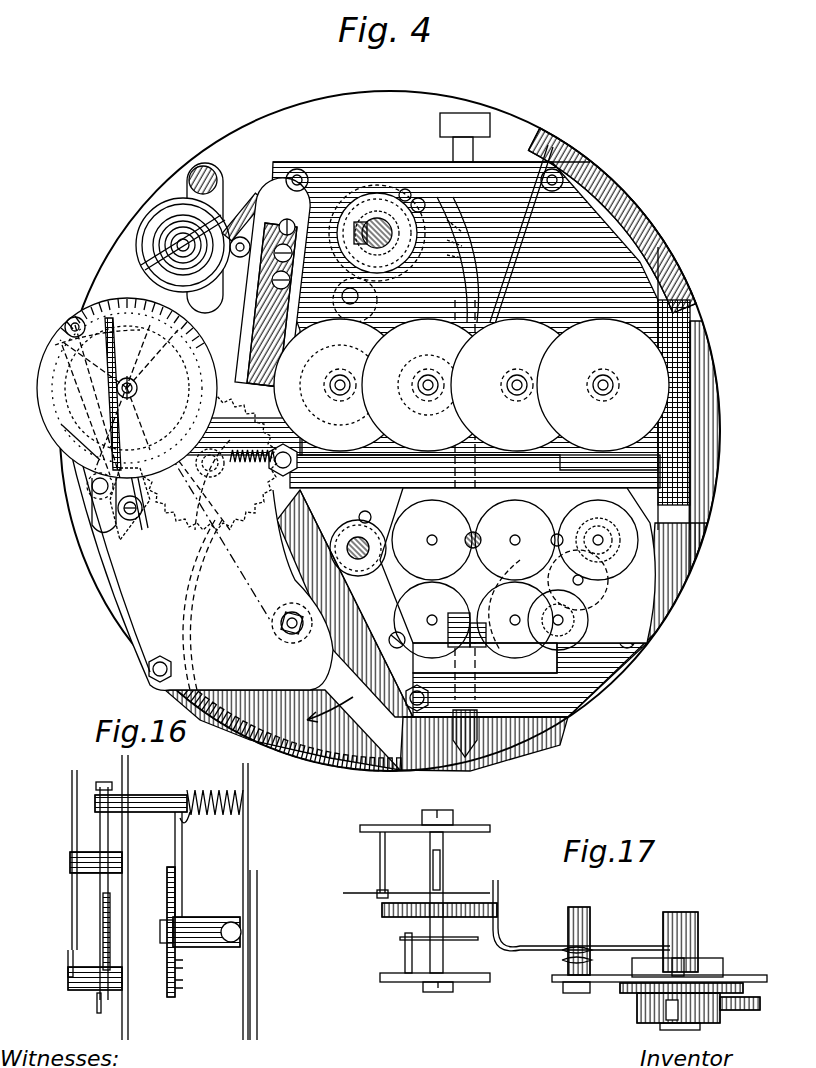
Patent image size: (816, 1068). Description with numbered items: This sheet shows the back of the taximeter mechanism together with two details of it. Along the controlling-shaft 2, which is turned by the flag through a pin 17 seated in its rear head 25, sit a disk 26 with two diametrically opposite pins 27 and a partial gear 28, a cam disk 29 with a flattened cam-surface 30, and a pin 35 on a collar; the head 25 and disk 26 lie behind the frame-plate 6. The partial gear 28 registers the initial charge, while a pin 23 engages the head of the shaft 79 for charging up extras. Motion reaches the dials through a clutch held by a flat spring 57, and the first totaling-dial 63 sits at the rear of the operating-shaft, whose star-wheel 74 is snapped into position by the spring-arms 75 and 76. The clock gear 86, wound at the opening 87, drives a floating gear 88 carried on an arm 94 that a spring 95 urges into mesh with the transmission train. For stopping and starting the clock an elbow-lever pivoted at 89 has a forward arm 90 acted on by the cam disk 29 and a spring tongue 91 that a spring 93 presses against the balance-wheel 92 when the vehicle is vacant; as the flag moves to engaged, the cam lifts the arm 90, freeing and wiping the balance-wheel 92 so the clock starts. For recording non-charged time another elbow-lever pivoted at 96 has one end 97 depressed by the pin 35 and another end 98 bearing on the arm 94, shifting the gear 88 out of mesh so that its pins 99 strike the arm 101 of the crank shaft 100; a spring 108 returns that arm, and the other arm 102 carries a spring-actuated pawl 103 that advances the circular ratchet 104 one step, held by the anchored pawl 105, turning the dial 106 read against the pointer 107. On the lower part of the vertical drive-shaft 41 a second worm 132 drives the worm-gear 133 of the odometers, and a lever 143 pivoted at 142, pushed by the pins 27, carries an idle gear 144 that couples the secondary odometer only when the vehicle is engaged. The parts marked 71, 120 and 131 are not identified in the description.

In FIG. 4, the controlling-shaft 2 is at (377, 233).
In FIG. 17, the controlling-shaft 2 is at (698, 925).
In FIG. 4, the frame-plate 6 is at (712, 437).
In FIG. 4, the pin of the flag-shaft 17 is at (347, 215).
In FIG. 4, the pin 23 is at (366, 512).
In FIG. 4, the head 25 is at (418, 198).
In FIG. 17, the head 25 is at (645, 1022).
In FIG. 4, the disk 26 is at (376, 192).
In FIG. 17, the disk 26 is at (628, 993).
In FIG. 4, the pins 27 is at (398, 162).
In FIG. 17, the pins 27 is at (680, 1024).
In FIG. 4, the partial gear 28 is at (334, 188).
In FIG. 4, the cam disk 29 is at (462, 222).
In FIG. 17, the cam disk 29 is at (725, 963).
In FIG. 4, the flattened cam-surface 30 is at (462, 188).
In FIG. 17, the flattened cam-surface 30 is at (712, 960).
In FIG. 4, the pin 35 is at (425, 205).
In FIG. 4, the vertical drive-shaft 41 is at (474, 150).
In FIG. 4, the flat spring 57 is at (262, 302).
In FIG. 4, the totaling-dial 63 is at (471, 403).
In FIG. 4, the pinion 71 is at (354, 500).
In FIG. 4, the star-wheel 74 is at (353, 476).
In FIG. 4, the spring-arm 75 is at (341, 300).
In FIG. 4, the spring-arm 76 is at (381, 469).
In FIG. 4, the shaft 79 is at (360, 578).
In FIG. 4, the clock gear 86 is at (350, 735).
In FIG. 4, the winding opening 87 is at (284, 636).
In FIG. 4, the floating gear 88 is at (200, 533).
In FIG. 16, the floating gear 88 is at (171, 998).
In FIG. 4, the pivot 89 is at (297, 168).
In FIG. 17, the pivot 89 is at (565, 990).
In FIG. 4, the forward arm 90 is at (405, 189).
In FIG. 17, the forward arm 90 is at (675, 960).
In FIG. 4, the spring tongue 91 is at (245, 205).
In FIG. 17, the spring tongue 91 is at (498, 930).
In FIG. 4, the balance-wheel 92 is at (165, 225).
In FIG. 17, the balance-wheel 92 is at (385, 915).
In FIG. 4, the spring 93 is at (340, 165).
In FIG. 17, the spring 93 is at (600, 950).
In FIG. 4, the arm 94 is at (268, 604).
In FIG. 16, the arm 94 is at (257, 965).
In FIG. 4, the spring 95 is at (258, 480).
In FIG. 16, the spring 95 is at (238, 922).
In FIG. 4, the pivot 96 is at (240, 237).
In FIG. 4, the end of elbow-lever 97 is at (462, 240).
In FIG. 4, the end of elbow-lever 98 is at (127, 388).
In FIG. 4, the pins 99 is at (178, 515).
In FIG. 16, the pins 99 is at (184, 975).
In FIG. 4, the crank shaft 100 is at (70, 318).
In FIG. 16, the crank shaft 100 is at (152, 800).
In FIG. 4, the arm 101 is at (135, 393).
In FIG. 16, the arm 101 is at (182, 870).
In FIG. 4, the arm 102 is at (88, 486).
In FIG. 16, the arm 102 is at (97, 1008).
In FIG. 4, the spring-actuated pawl 103 is at (118, 508).
In FIG. 16, the spring-actuated pawl 103 is at (103, 925).
In FIG. 4, the circular ratchet 104 is at (70, 428).
In FIG. 16, the circular ratchet 104 is at (100, 835).
In FIG. 4, the anchored pawl 105 is at (128, 520).
In FIG. 16, the anchored pawl 105 is at (110, 912).
In FIG. 4, the dial 106 is at (58, 345).
In FIG. 16, the dial 106 is at (74, 900).
In FIG. 4, the pointer 107 is at (92, 525).
In FIG. 16, the pointer 107 is at (68, 960).
In FIG. 16, the spring 108 is at (192, 822).
In FIG. 4, the plate 120 is at (685, 520).
In FIG. 4, the gear 131 is at (604, 585).
In FIG. 4, the second worm 132 is at (520, 685).
In FIG. 4, the worm-gear 133 is at (545, 670).
In FIG. 4, the pivot 142 is at (527, 493).
In FIG. 4, the lever 143 is at (460, 203).
In FIG. 17, the lever 143 is at (745, 1010).
In FIG. 4, the idle gear 144 is at (688, 519).